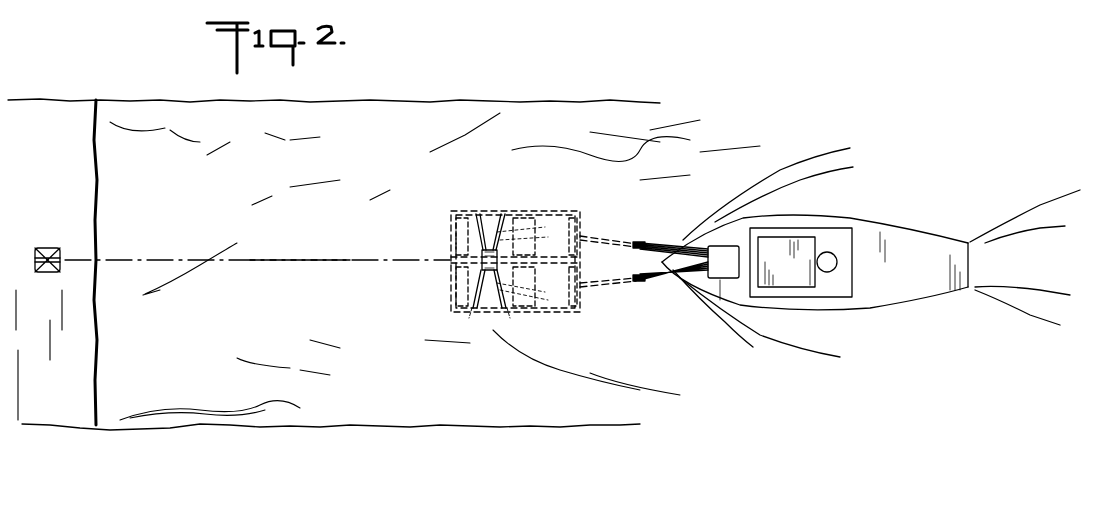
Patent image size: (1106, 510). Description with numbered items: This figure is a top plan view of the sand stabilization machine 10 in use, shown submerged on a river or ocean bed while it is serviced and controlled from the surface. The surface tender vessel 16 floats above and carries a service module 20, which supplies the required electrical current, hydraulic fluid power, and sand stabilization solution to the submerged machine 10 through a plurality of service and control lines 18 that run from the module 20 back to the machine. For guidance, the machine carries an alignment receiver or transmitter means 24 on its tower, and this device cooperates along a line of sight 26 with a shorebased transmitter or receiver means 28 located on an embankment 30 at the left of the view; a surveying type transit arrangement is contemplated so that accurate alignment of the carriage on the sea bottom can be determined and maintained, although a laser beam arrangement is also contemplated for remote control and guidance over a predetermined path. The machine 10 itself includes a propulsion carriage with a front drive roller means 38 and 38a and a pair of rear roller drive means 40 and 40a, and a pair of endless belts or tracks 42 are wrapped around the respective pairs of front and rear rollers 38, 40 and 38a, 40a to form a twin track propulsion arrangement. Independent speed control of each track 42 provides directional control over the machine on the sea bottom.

The sand stabilization machine 10 is at (474, 205).
The surface tender vessel 16 is at (898, 237).
The service and control lines 18 is at (646, 245).
The service module 20 is at (716, 271).
The alignment receiver or transmitter means 24 is at (489, 249).
The line of sight 26 is at (297, 258).
The shorebased transmitter or receiver means 28 is at (52, 246).
The embankment 30 is at (40, 167).
The front drive roller means 38 is at (445, 272).
The front drive roller means 38a is at (446, 233).
The rear roller drive means 40 is at (545, 303).
The rear roller drive means 40a is at (538, 235).
The endless belts or tracks 42 is at (447, 241).